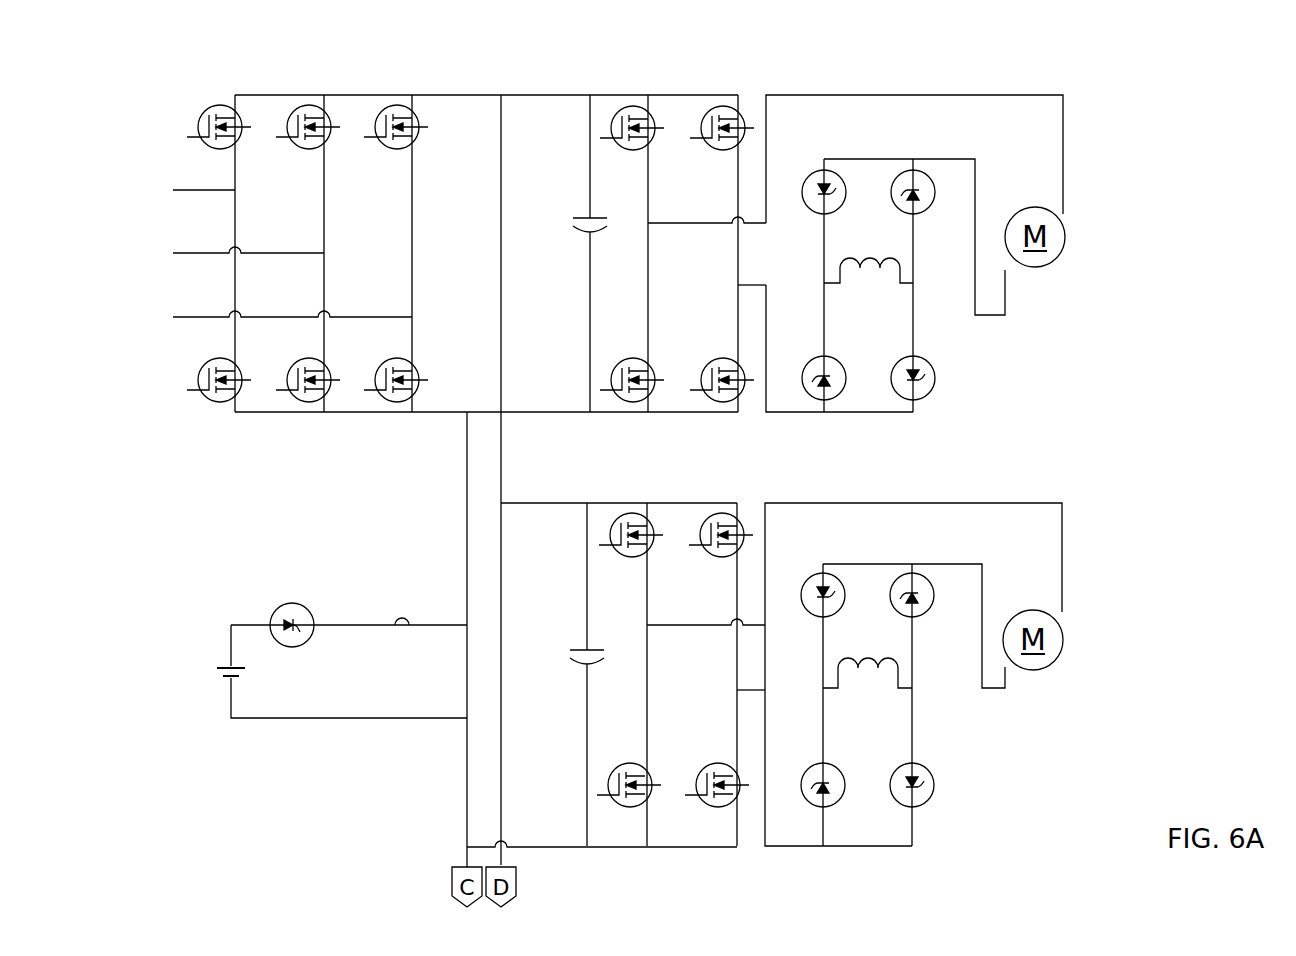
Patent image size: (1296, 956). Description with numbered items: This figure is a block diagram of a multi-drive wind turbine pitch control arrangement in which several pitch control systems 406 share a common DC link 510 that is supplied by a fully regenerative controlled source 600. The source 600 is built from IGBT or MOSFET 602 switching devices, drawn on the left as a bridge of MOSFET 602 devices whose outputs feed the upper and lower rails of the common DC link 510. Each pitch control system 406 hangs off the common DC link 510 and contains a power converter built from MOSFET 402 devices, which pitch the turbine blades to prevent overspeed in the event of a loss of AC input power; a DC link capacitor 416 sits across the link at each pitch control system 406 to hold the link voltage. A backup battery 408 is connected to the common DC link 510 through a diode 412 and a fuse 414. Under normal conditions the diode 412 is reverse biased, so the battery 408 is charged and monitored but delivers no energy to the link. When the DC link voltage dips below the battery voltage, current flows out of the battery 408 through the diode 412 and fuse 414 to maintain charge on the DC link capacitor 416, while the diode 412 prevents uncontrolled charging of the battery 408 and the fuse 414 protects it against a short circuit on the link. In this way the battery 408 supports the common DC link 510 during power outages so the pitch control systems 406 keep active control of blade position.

The regenerative controlled source 600 is at (363, 93).
The MOSFET 602 is at (439, 424).
The common DC link 510 is at (548, 95).
The DC link capacitor 416 is at (588, 214).
The MOSFET 402 is at (650, 148).
The pitch control system 406 is at (1088, 422).
The backup battery 408 is at (226, 664).
The diode 412 is at (312, 637).
The fuse 414 is at (406, 631).